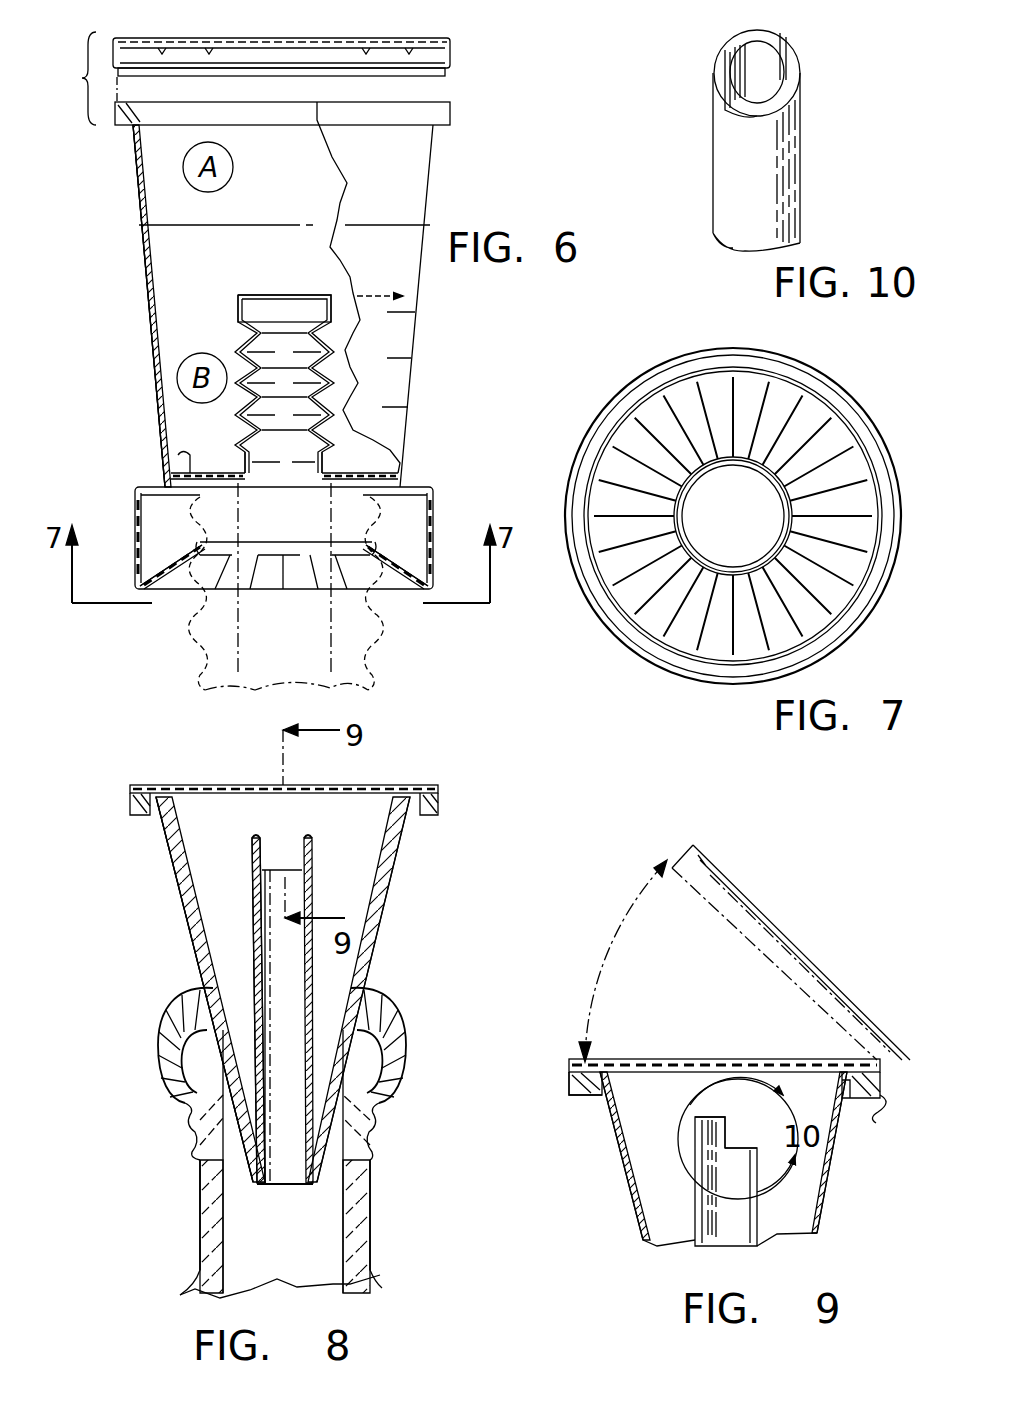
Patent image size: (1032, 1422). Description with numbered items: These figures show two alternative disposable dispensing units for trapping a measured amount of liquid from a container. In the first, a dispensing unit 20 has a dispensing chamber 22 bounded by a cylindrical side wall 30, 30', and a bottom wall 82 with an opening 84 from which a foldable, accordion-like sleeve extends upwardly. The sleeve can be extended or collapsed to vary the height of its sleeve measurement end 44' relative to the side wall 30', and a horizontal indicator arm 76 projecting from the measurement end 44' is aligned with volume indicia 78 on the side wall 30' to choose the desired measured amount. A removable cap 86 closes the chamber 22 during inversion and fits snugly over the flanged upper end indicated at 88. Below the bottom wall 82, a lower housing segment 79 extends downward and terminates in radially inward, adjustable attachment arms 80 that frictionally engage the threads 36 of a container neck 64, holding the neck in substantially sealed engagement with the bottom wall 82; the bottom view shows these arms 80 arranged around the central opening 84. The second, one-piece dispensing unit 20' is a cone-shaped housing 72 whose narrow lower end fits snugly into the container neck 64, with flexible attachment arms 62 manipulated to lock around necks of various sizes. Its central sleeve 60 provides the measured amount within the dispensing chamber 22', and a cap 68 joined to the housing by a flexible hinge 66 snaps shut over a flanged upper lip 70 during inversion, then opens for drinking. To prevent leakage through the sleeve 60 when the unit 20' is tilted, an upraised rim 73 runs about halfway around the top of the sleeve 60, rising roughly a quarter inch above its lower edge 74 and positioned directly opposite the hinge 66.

In FIG. 6, the dispensing unit 20 is at (103, 306).
In FIG. 8, the disposable dispensing unit 20' is at (149, 989).
In FIG. 6, the dispensing chamber 22 is at (262, 306).
In FIG. 9, the dispensing chamber 22 is at (697, 1159).
In FIG. 8, the dispensing chamber 22' is at (248, 989).
In FIG. 6, the cylindrical side wall 30 is at (255, 306).
In FIG. 6, the housing side wall 30' is at (406, 287).
In FIG. 8, the threads 36 is at (188, 1140).
In FIG. 6, the sleeve measurement end 44' is at (253, 291).
In FIG. 10, the central sleeve 60 is at (783, 175).
In FIG. 8, the central sleeve 60 is at (313, 977).
In FIG. 9, the central sleeve 60 is at (695, 1222).
In FIG. 8, the attachment arms 62 is at (158, 1037).
In FIG. 6, the container neck 64 is at (375, 677).
In FIG. 8, the container neck 64 is at (372, 1213).
In FIG. 9, the flexible hinge 66 is at (860, 1113).
In FIG. 8, the cap 68 is at (365, 793).
In FIG. 9, the cap 68 is at (727, 873).
In FIG. 9, the flanged upper lip 70 is at (590, 1095).
In FIG. 8, the cone-shaped housing 72 is at (395, 870).
In FIG. 9, the cone-shaped housing 72 is at (633, 1228).
In FIG. 10, the upraised rim 73 is at (783, 42).
In FIG. 8, the upraised rim 73 is at (255, 838).
In FIG. 9, the upraised rim 73 is at (697, 1117).
In FIG. 6, the lower edge 74 is at (246, 412).
In FIG. 10, the lower edge 74 is at (795, 97).
In FIG. 8, the lower edge 74 is at (268, 870).
In FIG. 9, the lower edge 74 is at (738, 1148).
In FIG. 6, the horizontal indicator arm 76 is at (340, 296).
In FIG. 6, the indicia 78 is at (400, 357).
In FIG. 6, the lower housing segment 79 is at (432, 525).
In FIG. 7, the lower housing segment 79 is at (622, 648).
In FIG. 6, the attachment arms 80 is at (172, 585).
In FIG. 7, the attachment arms 80 is at (712, 387).
In FIG. 6, the bottom wall 82 is at (185, 455).
In FIG. 6, the opening 84 is at (290, 475).
In FIG. 7, the opening 84 is at (770, 518).
In FIG. 6, the removable cap 86 is at (450, 44).
In FIG. 6, the flange 88 is at (450, 114).